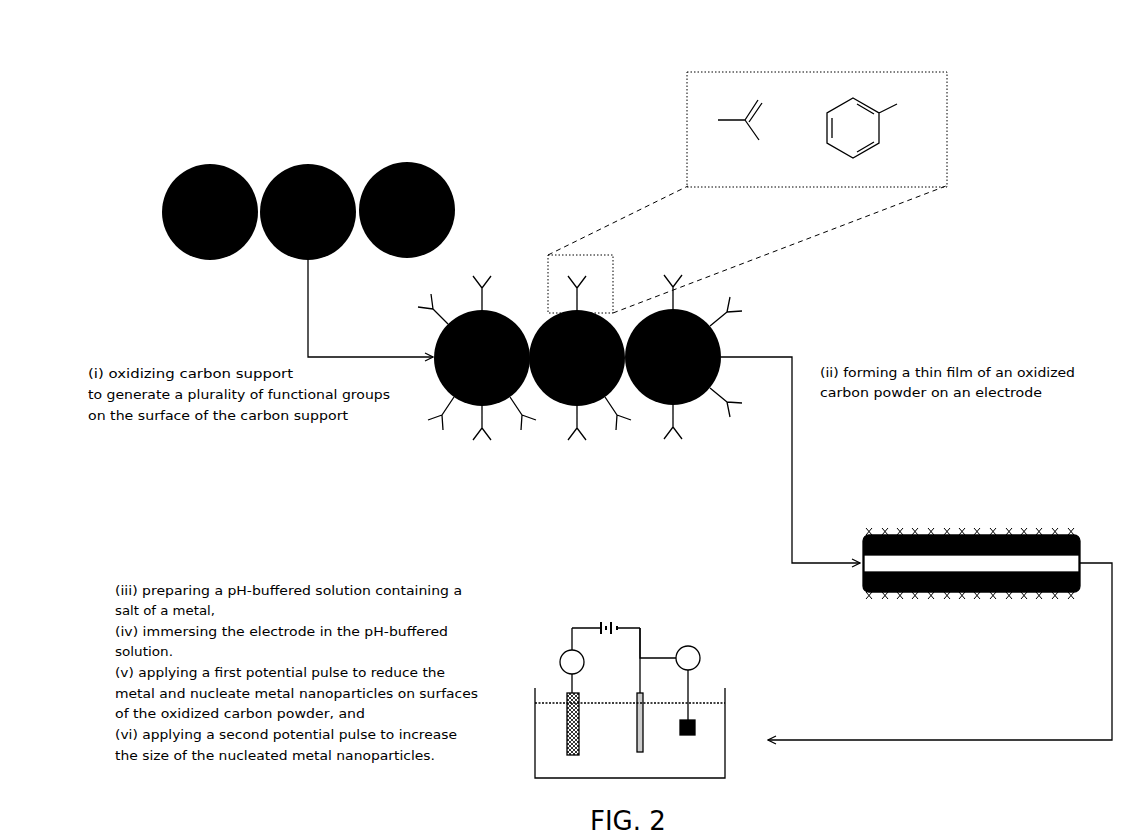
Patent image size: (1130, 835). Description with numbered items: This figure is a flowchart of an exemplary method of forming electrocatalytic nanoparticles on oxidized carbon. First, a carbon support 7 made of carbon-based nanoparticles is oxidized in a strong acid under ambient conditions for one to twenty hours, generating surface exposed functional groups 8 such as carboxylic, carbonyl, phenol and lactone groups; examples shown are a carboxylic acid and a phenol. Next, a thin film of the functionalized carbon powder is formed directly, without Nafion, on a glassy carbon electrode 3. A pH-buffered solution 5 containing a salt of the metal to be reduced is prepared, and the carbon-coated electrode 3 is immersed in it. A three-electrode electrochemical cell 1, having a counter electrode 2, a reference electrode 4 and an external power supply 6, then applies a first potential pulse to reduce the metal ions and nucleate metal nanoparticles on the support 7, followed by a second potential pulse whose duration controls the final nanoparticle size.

The three-electrode electrochemical cell 1 is at (525, 600).
The counter electrode 2 is at (565, 735).
The glassy carbon electrode 3 is at (1085, 558).
The reference electrode 4 is at (697, 728).
The pH-buffered solution 5 is at (546, 719).
The external power supply 6 is at (612, 613).
The support 7 is at (441, 167).
The surface exposed functional groups 8 is at (485, 278).